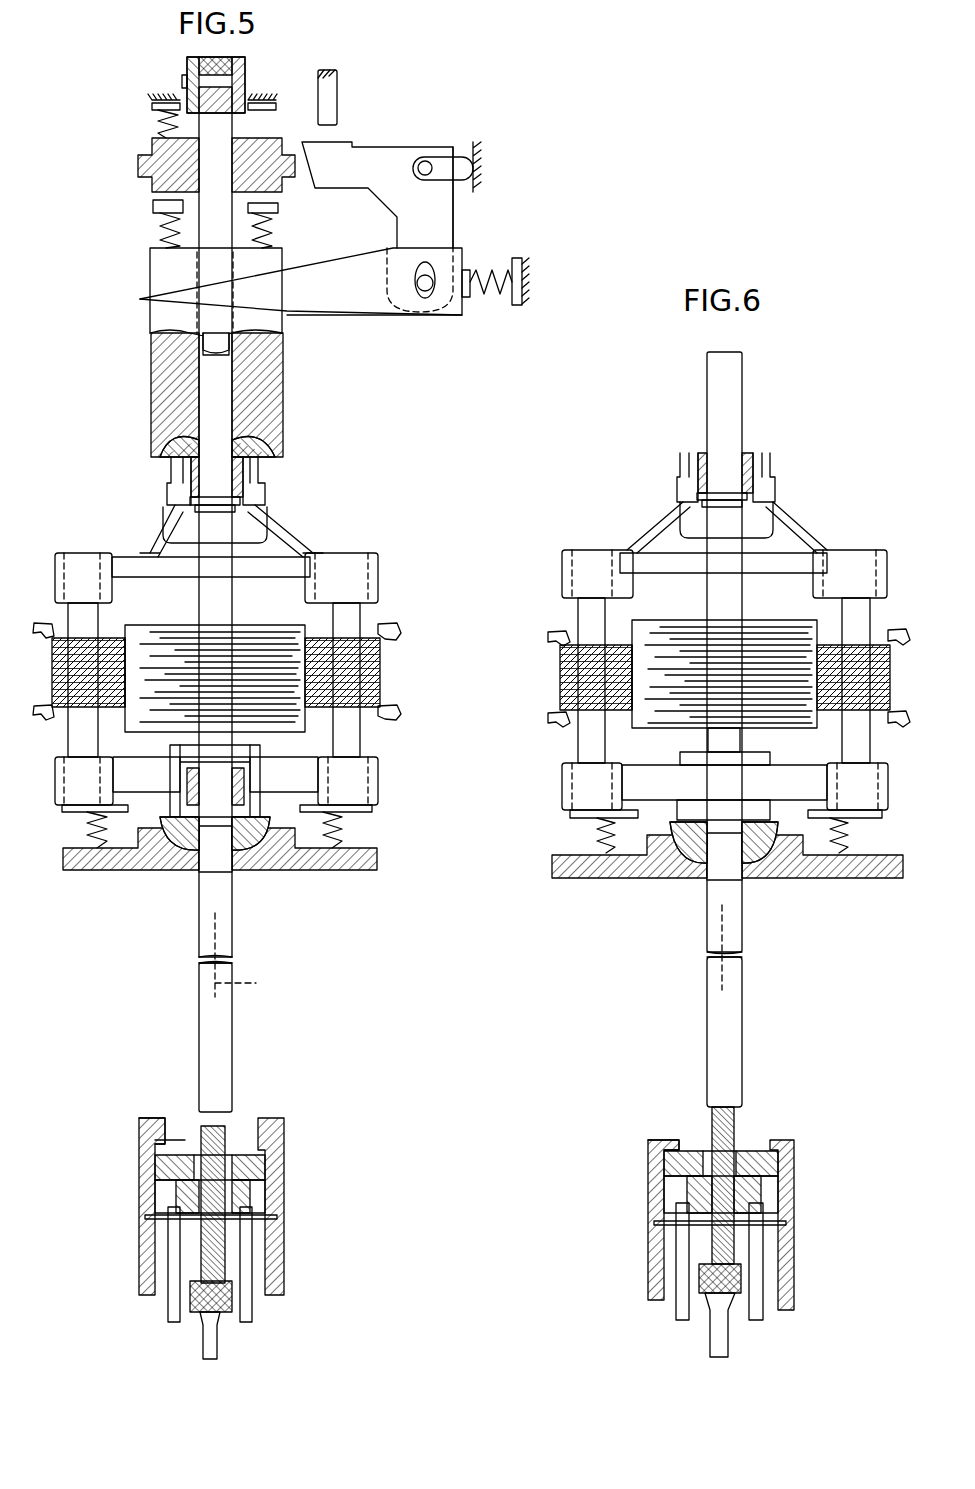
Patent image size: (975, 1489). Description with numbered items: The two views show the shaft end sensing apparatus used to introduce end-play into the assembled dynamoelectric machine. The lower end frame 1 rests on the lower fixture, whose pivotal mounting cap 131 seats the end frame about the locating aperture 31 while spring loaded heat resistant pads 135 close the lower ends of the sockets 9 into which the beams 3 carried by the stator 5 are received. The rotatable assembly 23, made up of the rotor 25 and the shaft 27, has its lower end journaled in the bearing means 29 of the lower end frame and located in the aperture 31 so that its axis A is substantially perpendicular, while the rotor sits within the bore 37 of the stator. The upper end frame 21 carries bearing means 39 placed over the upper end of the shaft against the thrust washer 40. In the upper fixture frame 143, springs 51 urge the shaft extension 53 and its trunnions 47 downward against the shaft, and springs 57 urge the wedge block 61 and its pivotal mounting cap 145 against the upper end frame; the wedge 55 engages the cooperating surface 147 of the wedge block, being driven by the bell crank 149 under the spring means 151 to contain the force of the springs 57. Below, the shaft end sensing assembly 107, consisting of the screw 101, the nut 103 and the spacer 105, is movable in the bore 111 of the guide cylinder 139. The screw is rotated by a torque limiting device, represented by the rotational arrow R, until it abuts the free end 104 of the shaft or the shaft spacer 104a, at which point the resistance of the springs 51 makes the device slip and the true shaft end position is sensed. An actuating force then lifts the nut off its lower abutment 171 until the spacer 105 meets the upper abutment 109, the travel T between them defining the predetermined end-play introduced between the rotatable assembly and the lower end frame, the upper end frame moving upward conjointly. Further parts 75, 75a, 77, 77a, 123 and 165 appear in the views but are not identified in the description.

In FIG. 5, the end frame 1 is at (380, 807).
In FIG. 6, the end frame 1 is at (886, 812).
In FIG. 5, the beams 3 is at (357, 620).
In FIG. 6, the beams 3 is at (578, 613).
In FIG. 5, the stator 5 is at (216, 672).
In FIG. 6, the stator 5 is at (725, 677).
In FIG. 5, the socket means 9 is at (65, 570).
In FIG. 6, the socket means 9 is at (572, 562).
In FIG. 5, the upper end frame 21 is at (147, 528).
In FIG. 6, the upper end frame 21 is at (650, 533).
In FIG. 6, the rotatable assembly 23 is at (785, 600).
In FIG. 5, the rotor 25 is at (222, 665).
In FIG. 6, the rotor 25 is at (694, 691).
In FIG. 5, the shaft 27 is at (199, 927).
In FIG. 6, the shaft 27 is at (707, 920).
In FIG. 5, the bearing means 29 is at (247, 792).
In FIG. 5, the locating aperture 31 is at (240, 838).
In FIG. 6, the locating aperture 31 is at (745, 863).
In FIG. 5, the bore 37 is at (125, 648).
In FIG. 6, the bore 37 is at (632, 630).
In FIG. 5, the bearing means 39 is at (237, 473).
In FIG. 6, the bearing means 39 is at (752, 478).
In FIG. 5, the thrust washer 40 is at (240, 508).
In FIG. 5, the trunnions 47 is at (138, 165).
In FIG. 5, the springs 51 is at (162, 128).
In FIG. 5, the shaft extension 53 is at (168, 302).
In FIG. 5, the wedge 55 is at (453, 316).
In FIG. 5, the springs 57 is at (160, 230).
In FIG. 5, the wedge block 61 is at (277, 372).
In FIG. 5, the hook 75 is at (43, 640).
In FIG. 6, the hook 75 is at (553, 640).
In FIG. 5, the hook 75a is at (400, 636).
In FIG. 6, the hook 75a is at (896, 645).
In FIG. 5, the hook 77 is at (45, 722).
In FIG. 6, the hook 77 is at (555, 718).
In FIG. 5, the hook 77a is at (400, 716).
In FIG. 6, the hook 77a is at (898, 727).
In FIG. 5, the screw 101 is at (229, 1125).
In FIG. 6, the screw 101 is at (738, 1126).
In FIG. 5, the nut 103 is at (258, 1197).
In FIG. 6, the nut 103 is at (768, 1194).
In FIG. 5, the free end 104 is at (226, 957).
In FIG. 6, the free end 104 is at (737, 957).
In FIG. 6, the shaft spacer 104a is at (742, 1052).
In FIG. 5, the spacer 105 is at (252, 1166).
In FIG. 6, the spacer 105 is at (765, 1166).
In FIG. 5, the shaft end sensing assembly 107 is at (312, 1134).
In FIG. 6, the shaft end sensing assembly 107 is at (819, 1142).
In FIG. 5, the abutment 109 is at (163, 1130).
In FIG. 6, the abutment 109 is at (672, 1145).
In FIG. 5, the bore 111 is at (151, 1200).
In FIG. 5, the base 123 is at (80, 857).
In FIG. 5, the pivotal mounting cap 131 is at (180, 833).
In FIG. 6, the pivotal mounting cap 131 is at (685, 862).
In FIG. 5, the heat resistant pads 135 is at (363, 813).
In FIG. 6, the heat resistant pads 135 is at (580, 815).
In FIG. 5, the guide cylinder 139 is at (284, 1260).
In FIG. 6, the guide cylinder 139 is at (794, 1275).
In FIG. 5, the fixture frame 143 is at (263, 100).
In FIG. 5, the pivotal mounting cap 145 is at (267, 440).
In FIG. 5, the cooperating surface 147 is at (170, 287).
In FIG. 5, the bell crank 149 is at (447, 217).
In FIG. 5, the spring means 151 is at (493, 267).
In FIG. 5, the pin 165 is at (337, 102).
In FIG. 5, the lower abutment 171 is at (151, 1246).
In FIG. 6, the lower abutment 171 is at (772, 1225).
In FIG. 5, the axis A is at (243, 955).
In FIG. 6, the axis A is at (735, 975).
In FIG. 5, the travel T is at (173, 1131).
In FIG. 5, the rotational arrow R is at (230, 1338).